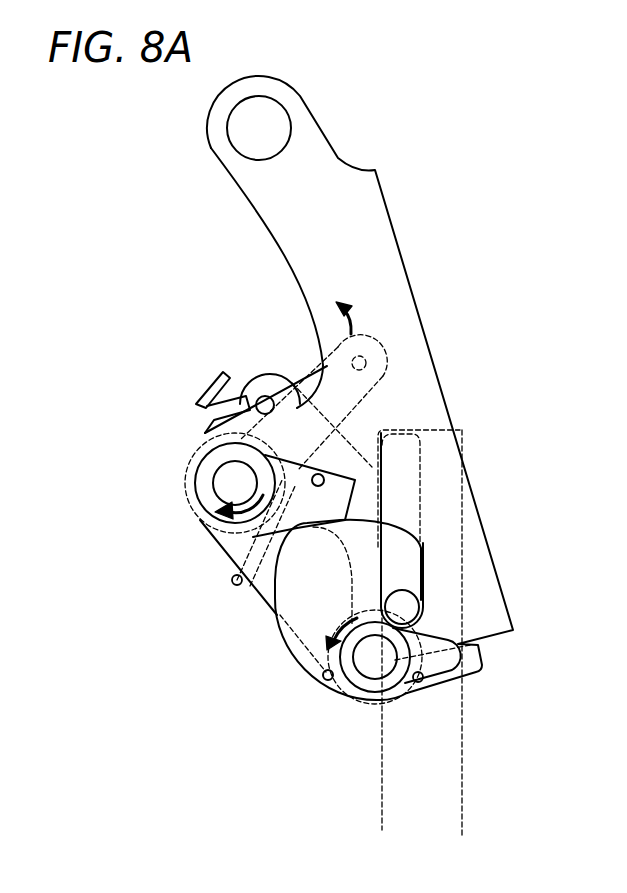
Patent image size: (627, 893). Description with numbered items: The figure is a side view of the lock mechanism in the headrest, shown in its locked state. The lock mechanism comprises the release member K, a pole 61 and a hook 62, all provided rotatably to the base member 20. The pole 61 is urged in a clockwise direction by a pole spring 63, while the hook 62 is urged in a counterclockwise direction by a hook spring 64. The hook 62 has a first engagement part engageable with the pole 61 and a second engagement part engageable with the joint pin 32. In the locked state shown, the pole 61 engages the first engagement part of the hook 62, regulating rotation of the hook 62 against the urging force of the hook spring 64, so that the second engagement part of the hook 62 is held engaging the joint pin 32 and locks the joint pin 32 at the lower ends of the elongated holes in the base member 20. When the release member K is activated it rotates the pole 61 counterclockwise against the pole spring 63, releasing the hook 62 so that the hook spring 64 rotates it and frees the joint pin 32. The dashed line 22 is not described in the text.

The base member 20 is at (375, 265).
The release member K is at (367, 338).
The pole 61 is at (207, 486).
The hook 62 is at (290, 661).
The pole spring 63 is at (232, 579).
The hook spring 64 is at (421, 681).
The joint pin 32 is at (397, 613).
The bracket 22 is at (435, 787).